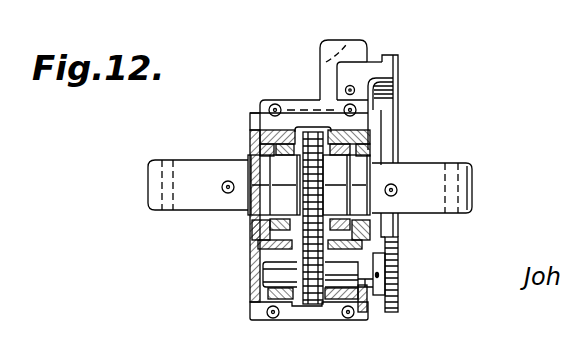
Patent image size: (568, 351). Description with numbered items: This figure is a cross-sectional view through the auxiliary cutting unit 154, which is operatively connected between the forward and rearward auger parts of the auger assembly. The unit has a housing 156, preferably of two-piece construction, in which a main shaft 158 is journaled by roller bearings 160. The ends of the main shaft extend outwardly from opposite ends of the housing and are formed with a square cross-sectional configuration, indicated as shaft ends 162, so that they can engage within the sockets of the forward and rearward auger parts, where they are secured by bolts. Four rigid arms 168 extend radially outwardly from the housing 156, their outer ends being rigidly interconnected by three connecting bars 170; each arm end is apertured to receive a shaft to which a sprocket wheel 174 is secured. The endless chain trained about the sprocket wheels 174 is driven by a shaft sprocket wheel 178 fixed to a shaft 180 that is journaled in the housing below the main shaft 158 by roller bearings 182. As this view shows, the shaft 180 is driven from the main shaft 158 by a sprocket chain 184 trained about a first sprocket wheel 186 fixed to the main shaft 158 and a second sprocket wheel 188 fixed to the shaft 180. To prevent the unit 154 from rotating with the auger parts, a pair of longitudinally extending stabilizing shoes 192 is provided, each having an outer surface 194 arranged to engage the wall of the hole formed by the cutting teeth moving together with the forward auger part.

The auxiliary cutting unit 154 is at (288, 72).
The housing 156 is at (252, 131).
The main shaft 158 is at (252, 238).
The roller bearings 160 is at (283, 140).
The shaft ends 162 is at (180, 211).
The rigid arms 168 is at (397, 91).
The connecting bars 170 is at (394, 63).
The sprocket wheel 174 is at (397, 79).
The shaft sprocket wheel 178 is at (392, 283).
The shaft 180 is at (343, 317).
The roller bearings 182 is at (318, 310).
The sprocket chain 184 is at (297, 254).
The first sprocket wheel 186 is at (302, 173).
The second sprocket wheel 188 is at (253, 302).
The stabilizing shoes 192 is at (370, 37).
The outer surface 194 is at (342, 38).